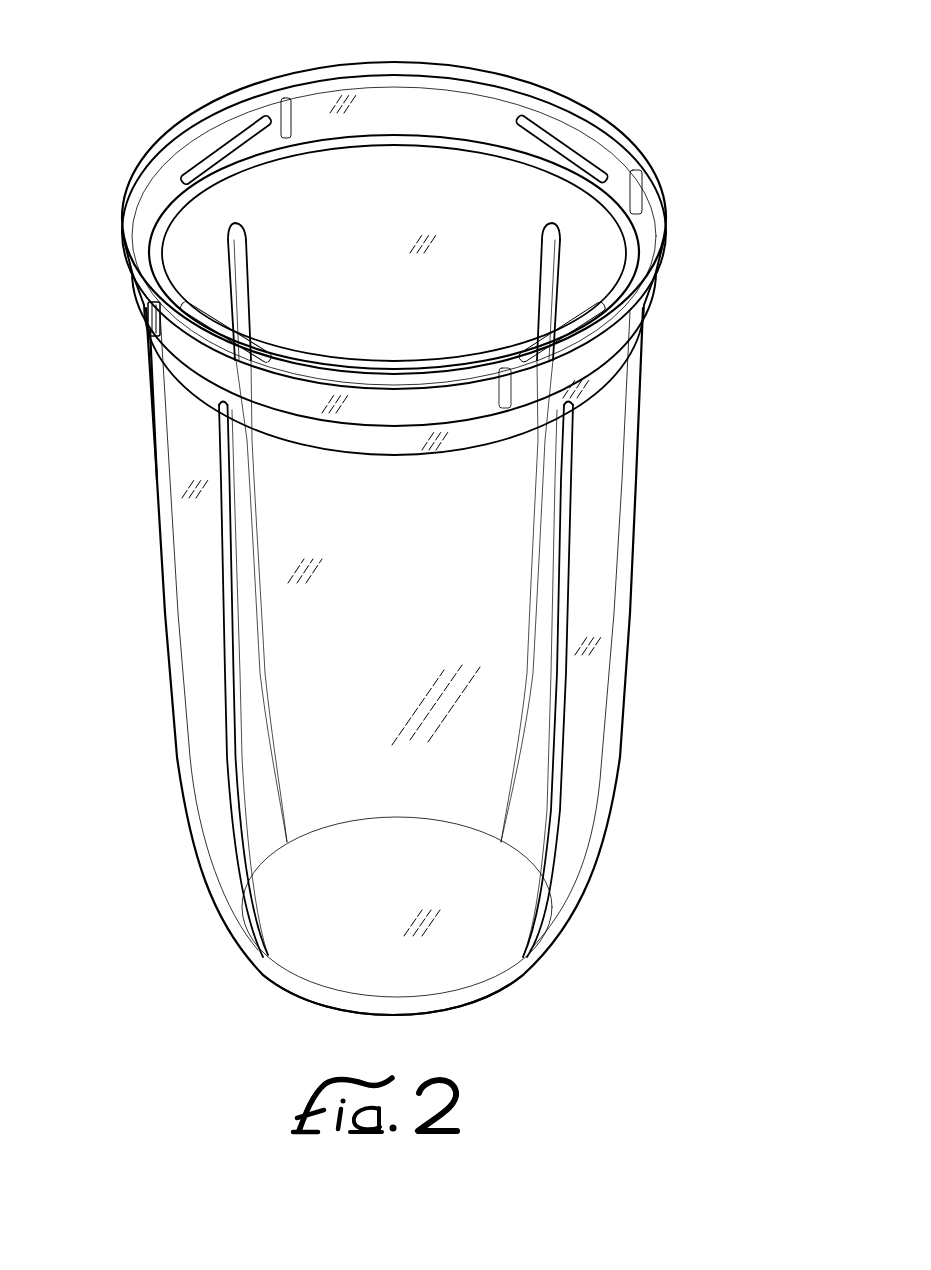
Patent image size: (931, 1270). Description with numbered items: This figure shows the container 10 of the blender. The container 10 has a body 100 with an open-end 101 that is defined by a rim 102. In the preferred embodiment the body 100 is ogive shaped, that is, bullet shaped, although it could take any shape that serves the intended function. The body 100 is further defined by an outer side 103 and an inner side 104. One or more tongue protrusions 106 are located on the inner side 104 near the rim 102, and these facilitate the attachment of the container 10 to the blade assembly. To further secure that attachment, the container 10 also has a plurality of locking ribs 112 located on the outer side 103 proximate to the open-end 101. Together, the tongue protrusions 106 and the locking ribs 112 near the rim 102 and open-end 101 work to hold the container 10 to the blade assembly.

The container 10 is at (730, 775).
The body 100 is at (660, 552).
The open-end 101 is at (398, 175).
The rim 102 is at (652, 202).
The outer side 103 is at (163, 610).
The inner side 104 is at (287, 205).
The tongue protrusions 106 is at (213, 143).
The locking ribs 112 is at (273, 107).